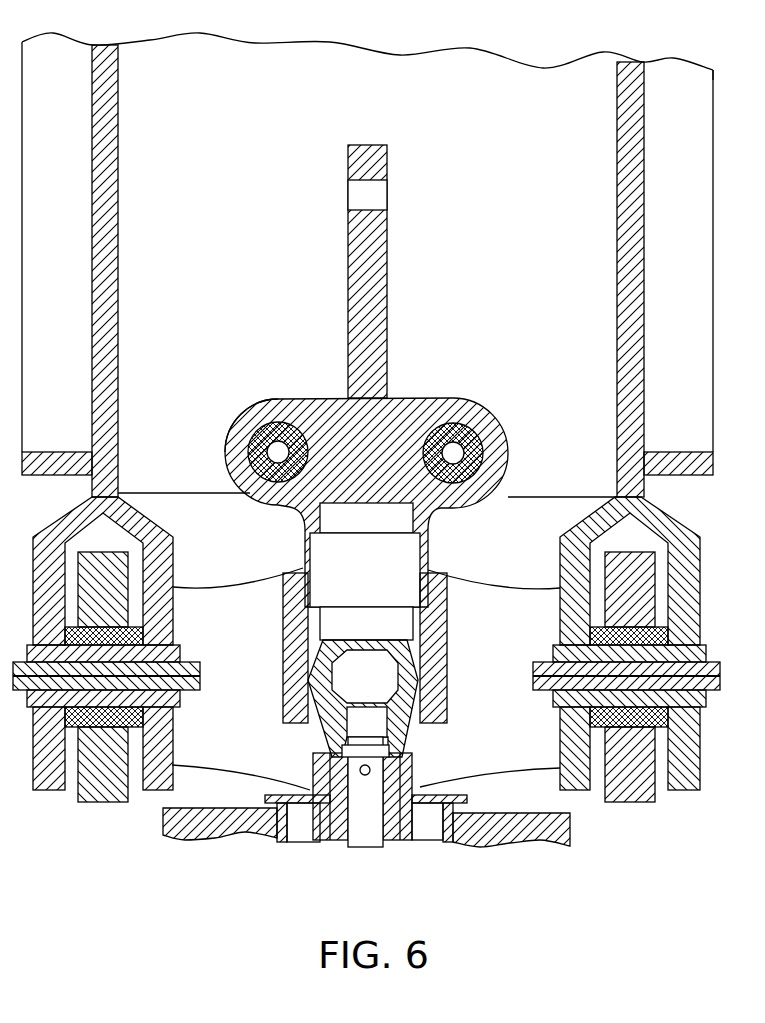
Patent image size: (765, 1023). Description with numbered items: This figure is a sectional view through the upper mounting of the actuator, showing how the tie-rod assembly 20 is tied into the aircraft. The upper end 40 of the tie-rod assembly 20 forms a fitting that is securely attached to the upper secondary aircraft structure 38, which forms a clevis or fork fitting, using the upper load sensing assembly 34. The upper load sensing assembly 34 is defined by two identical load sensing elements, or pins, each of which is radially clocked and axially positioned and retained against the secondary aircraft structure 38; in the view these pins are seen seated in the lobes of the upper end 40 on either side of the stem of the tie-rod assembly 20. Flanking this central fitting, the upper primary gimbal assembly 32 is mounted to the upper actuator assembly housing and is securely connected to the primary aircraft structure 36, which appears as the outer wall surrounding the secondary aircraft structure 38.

The tie-rod assembly 20 is at (417, 388).
The upper primary gimbal assembly 32 is at (97, 803).
The upper load sensing assembly 34 is at (257, 423).
The primary aircraft structure 36 is at (645, 115).
The secondary aircraft structure 38 is at (238, 149).
The upper end 40 is at (225, 450).